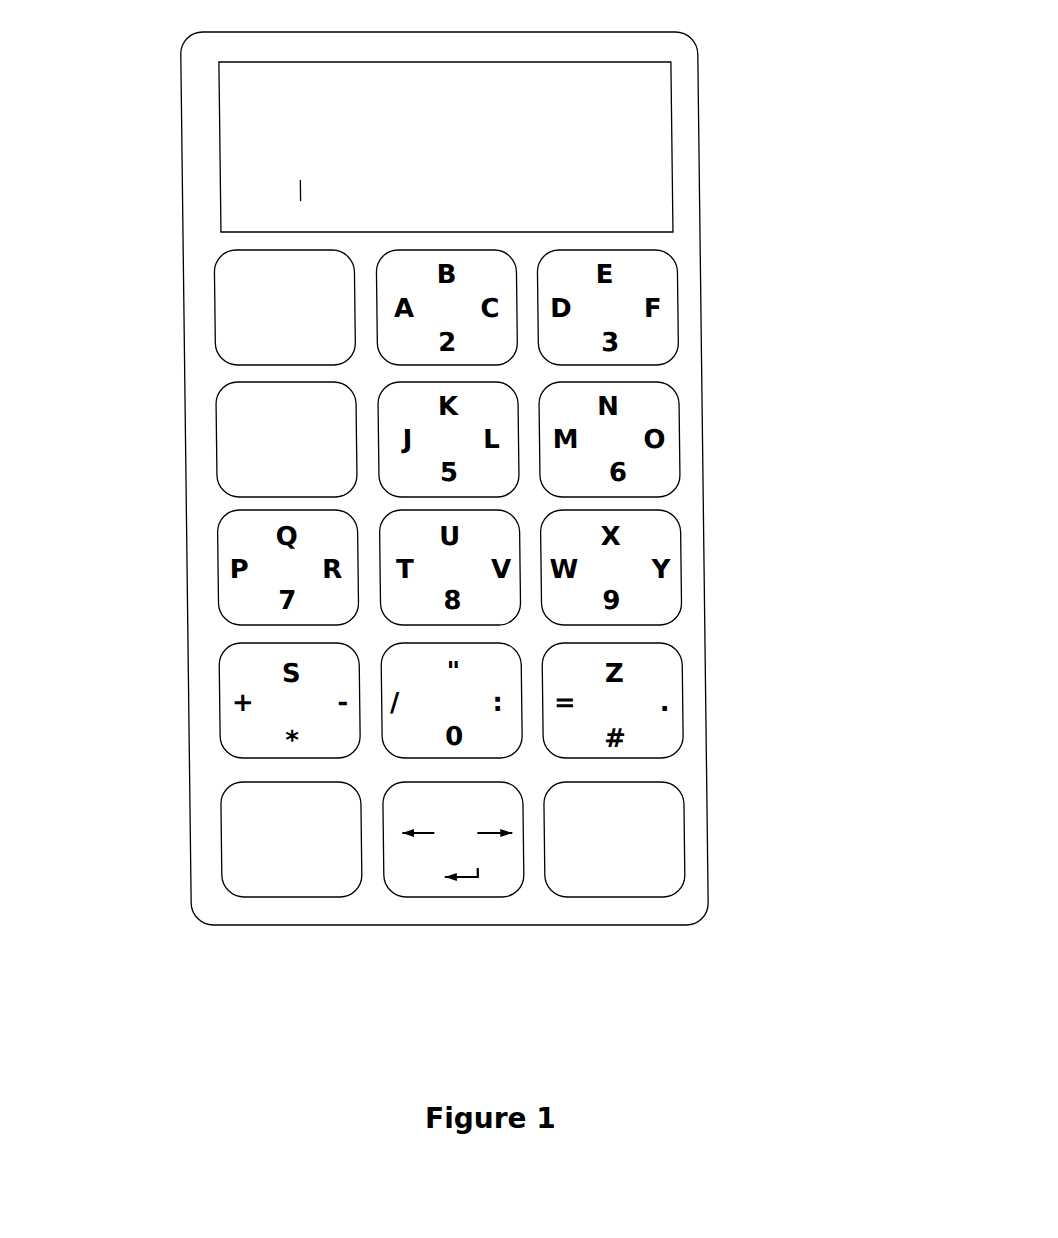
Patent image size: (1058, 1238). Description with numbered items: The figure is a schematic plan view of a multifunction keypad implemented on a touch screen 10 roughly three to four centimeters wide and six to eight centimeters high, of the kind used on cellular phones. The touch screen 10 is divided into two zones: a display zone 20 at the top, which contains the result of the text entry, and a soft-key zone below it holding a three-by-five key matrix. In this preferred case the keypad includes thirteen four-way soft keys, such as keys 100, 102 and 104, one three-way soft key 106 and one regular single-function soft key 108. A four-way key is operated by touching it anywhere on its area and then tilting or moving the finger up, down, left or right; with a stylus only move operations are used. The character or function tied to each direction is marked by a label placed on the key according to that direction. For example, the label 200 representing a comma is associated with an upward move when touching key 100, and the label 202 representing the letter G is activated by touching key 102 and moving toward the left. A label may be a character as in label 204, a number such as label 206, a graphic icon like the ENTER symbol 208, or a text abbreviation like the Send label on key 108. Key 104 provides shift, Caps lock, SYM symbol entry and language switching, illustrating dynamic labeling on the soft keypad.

The touch screen 10 is at (190, 552).
The display zone 20 is at (215, 191).
The 4-way soft key 100 is at (215, 306).
The 4-way soft key 102 is at (215, 434).
The 4-way soft key 104 is at (222, 840).
The 3-way soft key 106 is at (412, 900).
The regular one function soft key 108 is at (685, 835).
The label 200 is at (277, 271).
The label 202 is at (235, 457).
The label 204 is at (273, 403).
The numeral indicia 206 is at (263, 347).
The ENTER graphic symbol 208 is at (488, 873).